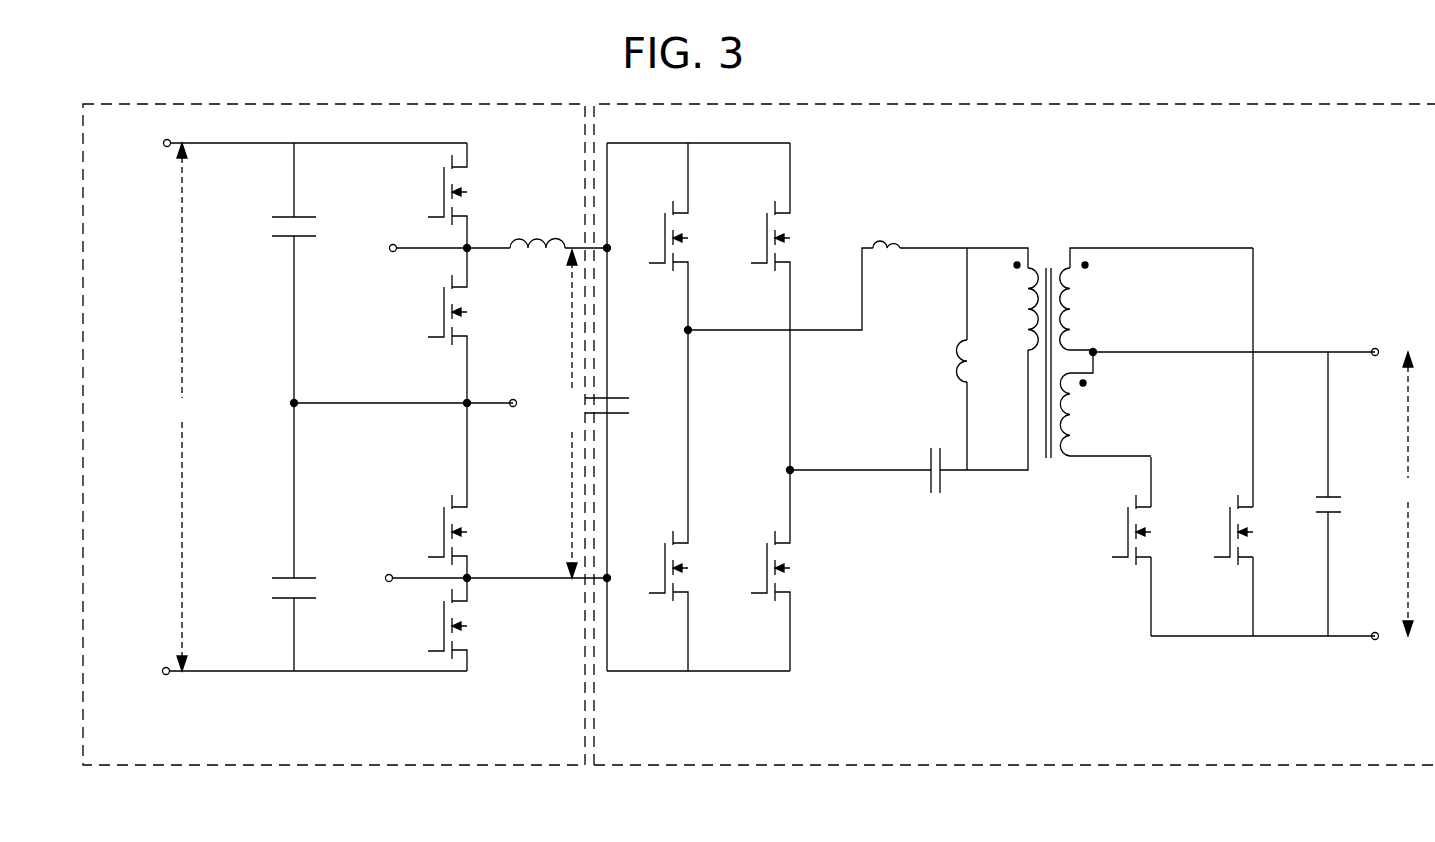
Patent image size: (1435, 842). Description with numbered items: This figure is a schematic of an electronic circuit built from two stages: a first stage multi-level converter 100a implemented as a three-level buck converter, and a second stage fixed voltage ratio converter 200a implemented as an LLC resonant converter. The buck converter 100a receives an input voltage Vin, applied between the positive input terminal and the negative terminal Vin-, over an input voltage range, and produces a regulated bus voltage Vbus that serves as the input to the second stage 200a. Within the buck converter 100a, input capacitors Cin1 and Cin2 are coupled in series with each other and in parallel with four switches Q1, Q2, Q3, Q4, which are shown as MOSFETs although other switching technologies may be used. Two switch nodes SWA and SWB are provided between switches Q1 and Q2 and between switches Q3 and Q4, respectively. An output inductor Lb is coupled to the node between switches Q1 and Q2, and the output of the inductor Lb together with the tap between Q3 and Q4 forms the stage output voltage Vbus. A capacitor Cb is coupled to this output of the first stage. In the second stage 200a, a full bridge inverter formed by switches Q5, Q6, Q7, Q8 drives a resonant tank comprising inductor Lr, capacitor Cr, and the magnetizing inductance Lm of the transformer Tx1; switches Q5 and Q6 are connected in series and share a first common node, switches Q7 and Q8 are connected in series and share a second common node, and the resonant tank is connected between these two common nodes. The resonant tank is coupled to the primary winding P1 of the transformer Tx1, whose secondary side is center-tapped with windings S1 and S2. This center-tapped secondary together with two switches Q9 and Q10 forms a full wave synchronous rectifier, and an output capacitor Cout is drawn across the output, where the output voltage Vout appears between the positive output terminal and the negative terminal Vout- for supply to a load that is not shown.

The first stage multi-level converter 100a is at (353, 753).
The second stage fixed voltage ratio converter 200a is at (1043, 753).
The negative input terminal Vin- is at (131, 652).
The input voltage Vin is at (187, 407).
The input capacitor Cin1 is at (270, 225).
The input capacitor Cin2 is at (271, 587).
The switch node SWA is at (375, 237).
The switch node SWB is at (375, 548).
The switch Q1 is at (460, 195).
The switch Q2 is at (460, 325).
The switch Q3 is at (460, 490).
The switch Q4 is at (460, 624).
The output inductor Lb is at (537, 226).
The bus voltage Vbus is at (572, 414).
The capacitor Cb is at (615, 395).
The switch Q5 is at (680, 236).
The switch Q6 is at (680, 500).
The switch Q7 is at (782, 306).
The switch Q8 is at (782, 570).
The inductor Lr is at (886, 226).
The magnetizing inductance Lm is at (943, 361).
The capacitor Cr is at (938, 487).
The transformer Tx1 is at (1048, 339).
The primary winding P1 is at (1019, 306).
The first secondary winding S1 is at (1079, 306).
The second secondary winding S2 is at (1078, 414).
The switch Q9 is at (1146, 530).
The switch Q10 is at (1253, 530).
The output capacitor Cout is at (1349, 507).
The negative output terminal Vout- is at (1402, 637).
The output voltage Vout is at (1405, 494).